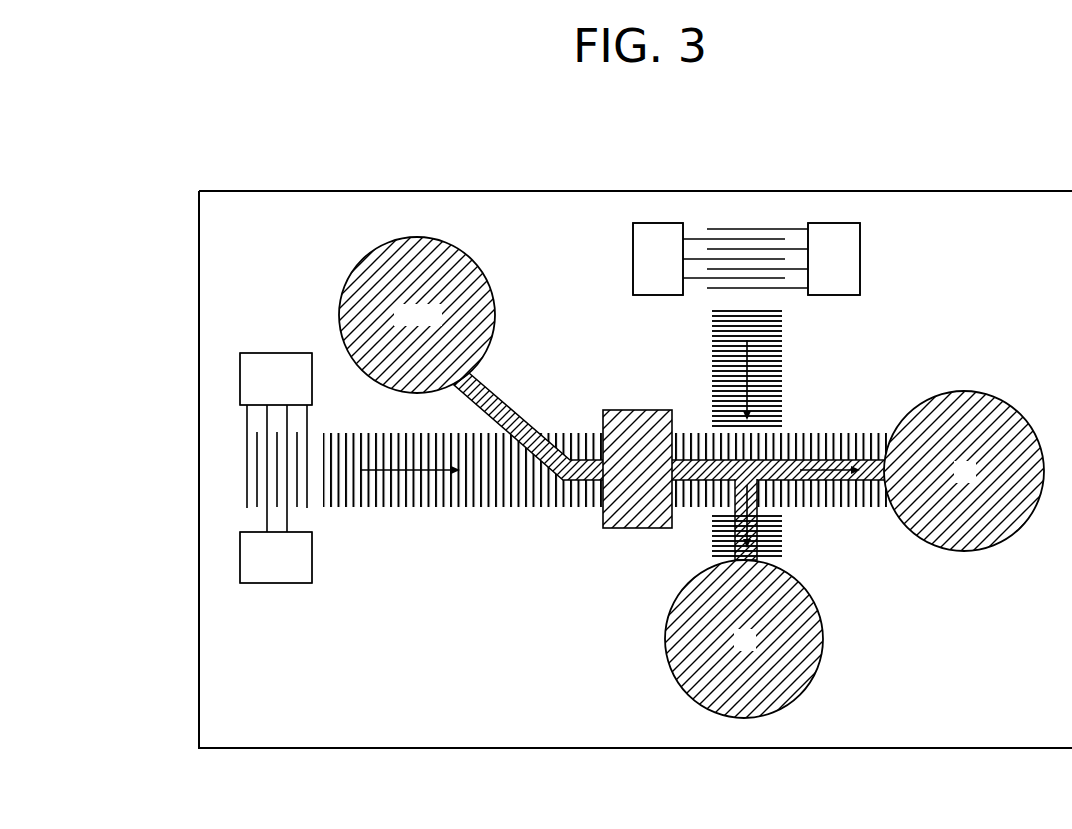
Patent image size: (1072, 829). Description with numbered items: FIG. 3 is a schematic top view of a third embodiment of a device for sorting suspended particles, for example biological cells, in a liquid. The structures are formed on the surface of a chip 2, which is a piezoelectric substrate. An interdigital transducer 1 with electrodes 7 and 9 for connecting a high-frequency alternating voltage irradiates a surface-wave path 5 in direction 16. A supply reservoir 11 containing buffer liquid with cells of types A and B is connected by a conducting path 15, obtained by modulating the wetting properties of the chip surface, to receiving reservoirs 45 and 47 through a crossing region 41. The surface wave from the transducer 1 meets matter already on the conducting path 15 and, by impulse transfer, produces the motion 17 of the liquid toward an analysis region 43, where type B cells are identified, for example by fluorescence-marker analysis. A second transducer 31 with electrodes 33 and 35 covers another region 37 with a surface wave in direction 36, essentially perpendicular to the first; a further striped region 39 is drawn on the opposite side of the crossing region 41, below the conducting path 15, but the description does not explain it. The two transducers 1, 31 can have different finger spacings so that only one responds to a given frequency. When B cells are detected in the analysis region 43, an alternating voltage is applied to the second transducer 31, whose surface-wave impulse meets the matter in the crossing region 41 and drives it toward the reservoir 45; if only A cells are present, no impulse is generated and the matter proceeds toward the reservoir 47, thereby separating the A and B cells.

The interdigital transducer 1 is at (228, 458).
The chip 2 is at (251, 214).
The surface-wave path 5 is at (350, 490).
The electrode 7 is at (278, 583).
The electrode 9 is at (275, 365).
The supply reservoir 11 is at (417, 240).
The conducting path 15 is at (537, 420).
The direction of surface wave 16 is at (426, 481).
The motion of the quantity of matter 17 is at (824, 462).
The second transducer 31 is at (743, 178).
The electrode 33 is at (833, 222).
The electrode 35 is at (660, 222).
The direction of surface wave 36 is at (762, 366).
The region covered by surface wave 37 is at (768, 335).
The electrode 39 is at (712, 562).
The crossing region 41 is at (760, 490).
The analysis region 43 is at (640, 418).
The receiving reservoir 45 is at (815, 667).
The receiving reservoir 47 is at (978, 548).